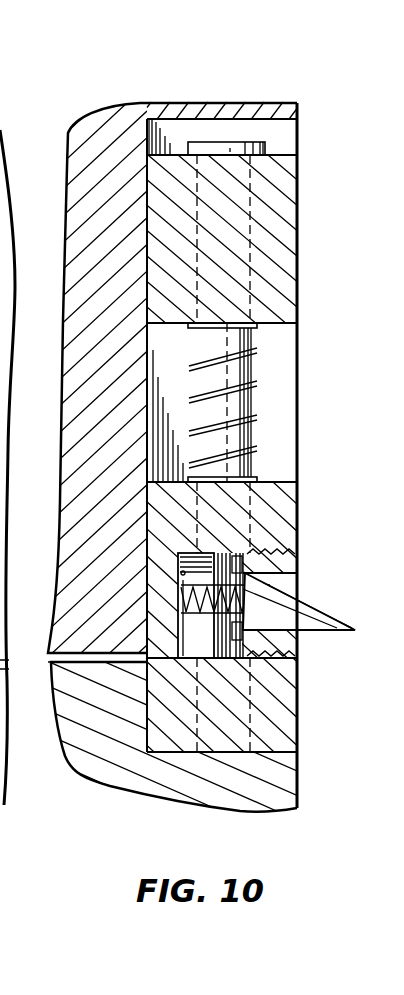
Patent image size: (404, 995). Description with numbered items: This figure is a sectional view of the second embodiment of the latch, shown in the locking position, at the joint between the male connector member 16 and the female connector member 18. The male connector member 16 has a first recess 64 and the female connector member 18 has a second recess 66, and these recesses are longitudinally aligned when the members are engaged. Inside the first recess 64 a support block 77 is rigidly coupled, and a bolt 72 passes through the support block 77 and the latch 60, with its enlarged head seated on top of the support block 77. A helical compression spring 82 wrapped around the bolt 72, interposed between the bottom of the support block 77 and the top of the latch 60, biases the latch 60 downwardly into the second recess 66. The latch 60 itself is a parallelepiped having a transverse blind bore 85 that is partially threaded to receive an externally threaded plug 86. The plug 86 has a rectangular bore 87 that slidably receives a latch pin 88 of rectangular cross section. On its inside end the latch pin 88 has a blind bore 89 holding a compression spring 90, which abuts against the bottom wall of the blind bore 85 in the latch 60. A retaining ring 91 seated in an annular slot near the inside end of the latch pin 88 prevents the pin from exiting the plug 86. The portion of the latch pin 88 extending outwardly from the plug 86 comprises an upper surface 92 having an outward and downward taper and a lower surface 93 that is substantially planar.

The male connector member 16 is at (66, 186).
The female connector member 18 is at (63, 753).
The latch 60 is at (298, 517).
The first recess 64 is at (287, 334).
The second recess 66 is at (283, 751).
The bolt 72 is at (257, 368).
The support block 77 is at (300, 218).
The helical compression spring 82 is at (253, 380).
The transverse blind bore 85 is at (178, 578).
The externally threaded plug 86 is at (297, 572).
The rectangular bore 87 is at (299, 634).
The latch pin 88 is at (320, 597).
The blind bore 89 is at (357, 630).
The compression spring 90 is at (181, 600).
The retaining ring 91 is at (225, 552).
The upper surface 92 is at (328, 619).
The lower surface 93 is at (331, 635).